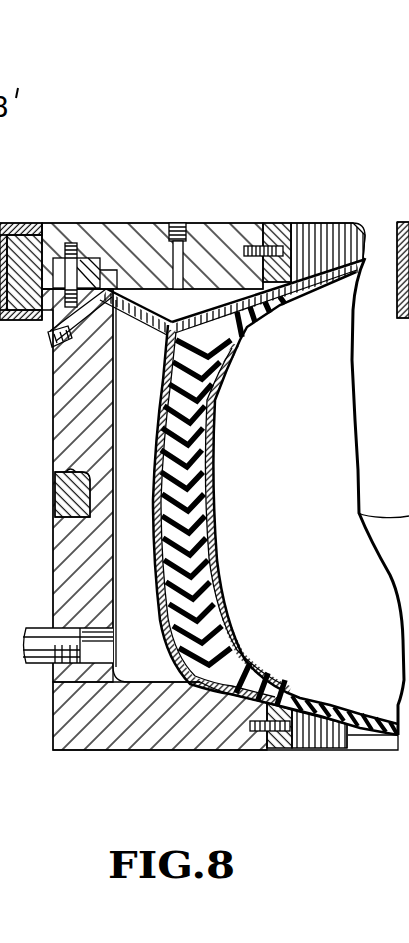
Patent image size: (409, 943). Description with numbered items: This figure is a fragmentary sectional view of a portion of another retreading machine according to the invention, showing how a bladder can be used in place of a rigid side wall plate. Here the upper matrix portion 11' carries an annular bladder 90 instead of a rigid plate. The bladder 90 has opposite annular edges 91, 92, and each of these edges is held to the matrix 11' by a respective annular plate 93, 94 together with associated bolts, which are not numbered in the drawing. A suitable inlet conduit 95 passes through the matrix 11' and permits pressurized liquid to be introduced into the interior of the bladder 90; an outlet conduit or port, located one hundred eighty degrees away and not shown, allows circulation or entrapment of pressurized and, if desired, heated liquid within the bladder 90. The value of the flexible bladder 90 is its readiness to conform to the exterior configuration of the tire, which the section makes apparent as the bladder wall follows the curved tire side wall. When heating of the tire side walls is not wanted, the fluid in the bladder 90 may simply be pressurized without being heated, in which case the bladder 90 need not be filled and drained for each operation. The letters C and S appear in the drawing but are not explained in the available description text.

The upper matrix portion 11' is at (203, 211).
The annular bladder 90 is at (232, 324).
The annular edge 91 is at (268, 223).
The annular edge 92 is at (45, 265).
The annular plate 93 is at (296, 223).
The annular plate 94 is at (45, 265).
The inlet conduit 95 is at (178, 222).
The cover C is at (212, 553).
The seal strip S is at (183, 579).